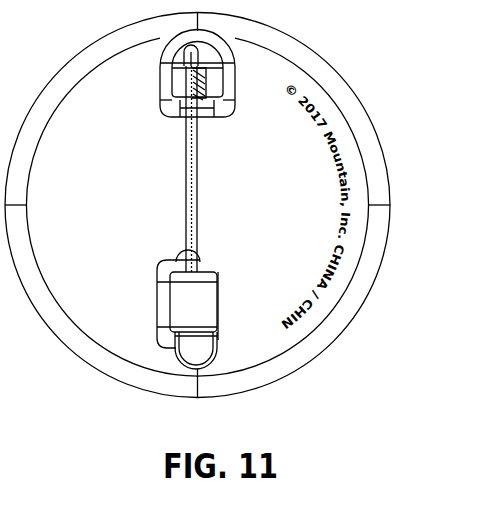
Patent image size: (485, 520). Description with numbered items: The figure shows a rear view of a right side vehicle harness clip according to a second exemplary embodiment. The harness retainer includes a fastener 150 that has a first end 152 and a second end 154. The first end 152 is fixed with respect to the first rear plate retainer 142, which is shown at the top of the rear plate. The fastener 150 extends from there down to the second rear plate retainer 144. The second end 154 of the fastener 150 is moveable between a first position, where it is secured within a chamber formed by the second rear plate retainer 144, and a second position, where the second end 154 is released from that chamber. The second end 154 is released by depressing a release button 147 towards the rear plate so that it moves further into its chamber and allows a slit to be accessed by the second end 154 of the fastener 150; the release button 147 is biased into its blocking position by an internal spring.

The first rear plate retainer 142 is at (165, 75).
The second rear plate retainer 144 is at (167, 317).
The release button 147 is at (214, 351).
The fastener 150 is at (189, 158).
The first end 152 is at (186, 128).
The second end 154 is at (198, 261).